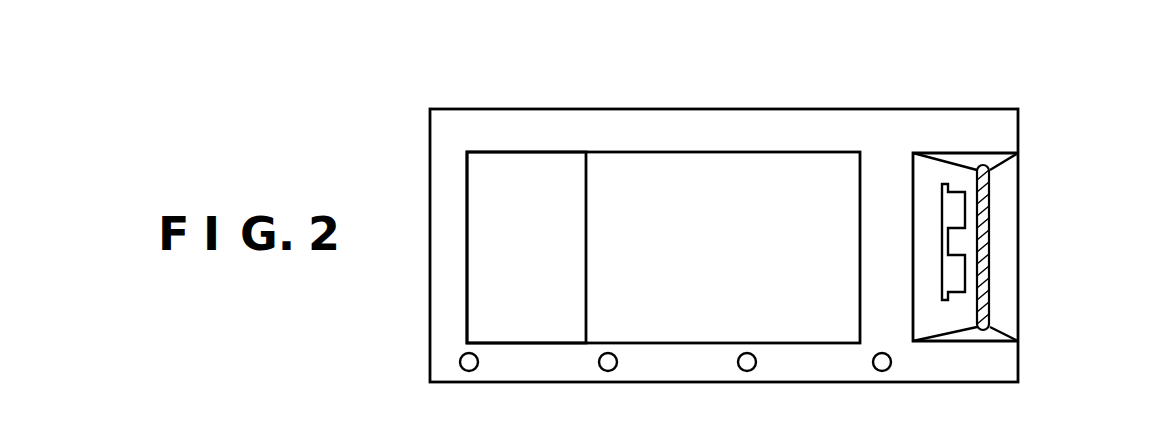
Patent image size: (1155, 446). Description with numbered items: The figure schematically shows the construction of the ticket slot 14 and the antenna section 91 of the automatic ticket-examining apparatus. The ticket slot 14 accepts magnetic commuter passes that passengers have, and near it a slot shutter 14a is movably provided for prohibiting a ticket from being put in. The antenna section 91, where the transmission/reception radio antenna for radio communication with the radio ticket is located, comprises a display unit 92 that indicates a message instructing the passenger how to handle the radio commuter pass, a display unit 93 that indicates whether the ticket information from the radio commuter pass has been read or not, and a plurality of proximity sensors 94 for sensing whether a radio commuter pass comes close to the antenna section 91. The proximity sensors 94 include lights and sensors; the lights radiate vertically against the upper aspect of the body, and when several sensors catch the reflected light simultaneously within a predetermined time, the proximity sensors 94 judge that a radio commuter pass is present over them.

The display unit 92 is at (830, 152).
The antenna section 91 is at (643, 156).
The display unit 93 is at (527, 152).
The proximity sensors 94 is at (605, 370).
The ticket slot 14 is at (987, 198).
The slot shutter 14a is at (953, 275).